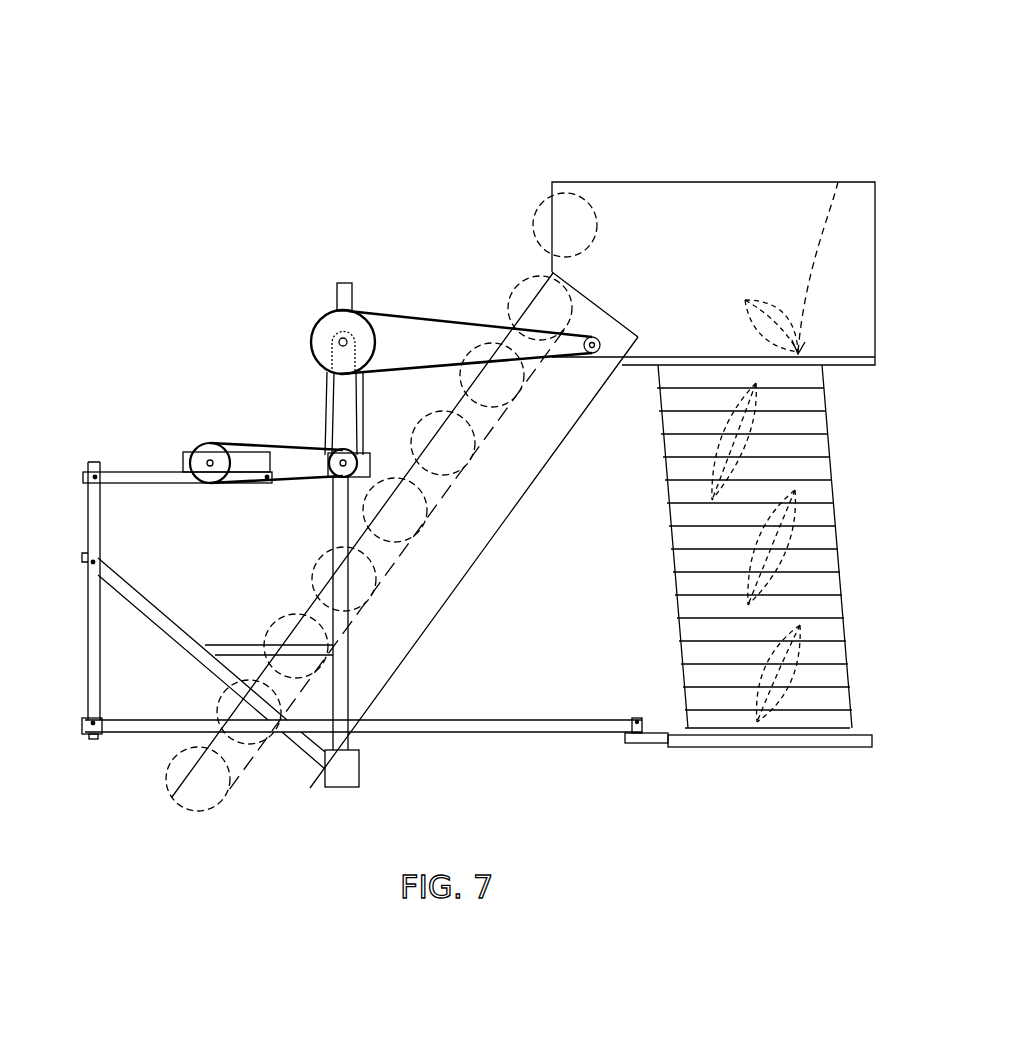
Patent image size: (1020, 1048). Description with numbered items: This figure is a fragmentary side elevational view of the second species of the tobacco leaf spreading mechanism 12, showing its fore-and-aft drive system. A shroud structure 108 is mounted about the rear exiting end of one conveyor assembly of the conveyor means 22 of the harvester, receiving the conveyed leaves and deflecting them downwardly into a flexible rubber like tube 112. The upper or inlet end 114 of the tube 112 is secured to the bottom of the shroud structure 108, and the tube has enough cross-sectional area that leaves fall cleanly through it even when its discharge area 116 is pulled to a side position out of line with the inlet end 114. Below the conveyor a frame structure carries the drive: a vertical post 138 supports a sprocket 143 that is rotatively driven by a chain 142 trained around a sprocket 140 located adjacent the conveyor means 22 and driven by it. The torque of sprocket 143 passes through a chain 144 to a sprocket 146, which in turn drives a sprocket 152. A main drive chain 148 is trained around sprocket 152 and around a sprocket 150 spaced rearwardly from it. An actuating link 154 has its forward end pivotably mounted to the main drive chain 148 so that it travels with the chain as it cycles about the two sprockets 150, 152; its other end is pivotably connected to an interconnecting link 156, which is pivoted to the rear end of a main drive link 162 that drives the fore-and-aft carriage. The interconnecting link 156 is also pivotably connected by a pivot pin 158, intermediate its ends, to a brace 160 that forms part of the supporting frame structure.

The leaf spreading mechanism 12 is at (470, 416).
The conveyor means 22 is at (425, 603).
The shroud structure 108 is at (703, 230).
The flexible rubber like tube 112 is at (693, 616).
The inlet end 114 is at (832, 182).
The discharge area 116 is at (855, 725).
The vertical post 138 is at (348, 690).
The sprocket 140 is at (563, 444).
The chain 142 is at (452, 324).
The sprocket 143 is at (345, 335).
The chain 144 is at (368, 398).
The sprocket 146 is at (368, 447).
The main drive chain 148 is at (292, 445).
The sprocket 150 is at (210, 462).
The sprocket 152 is at (325, 477).
The actuating link 154 is at (133, 474).
The interconnecting link 156 is at (92, 660).
The pivot pin 158 is at (92, 553).
The brace 160 is at (160, 618).
The main drive link 162 is at (572, 733).